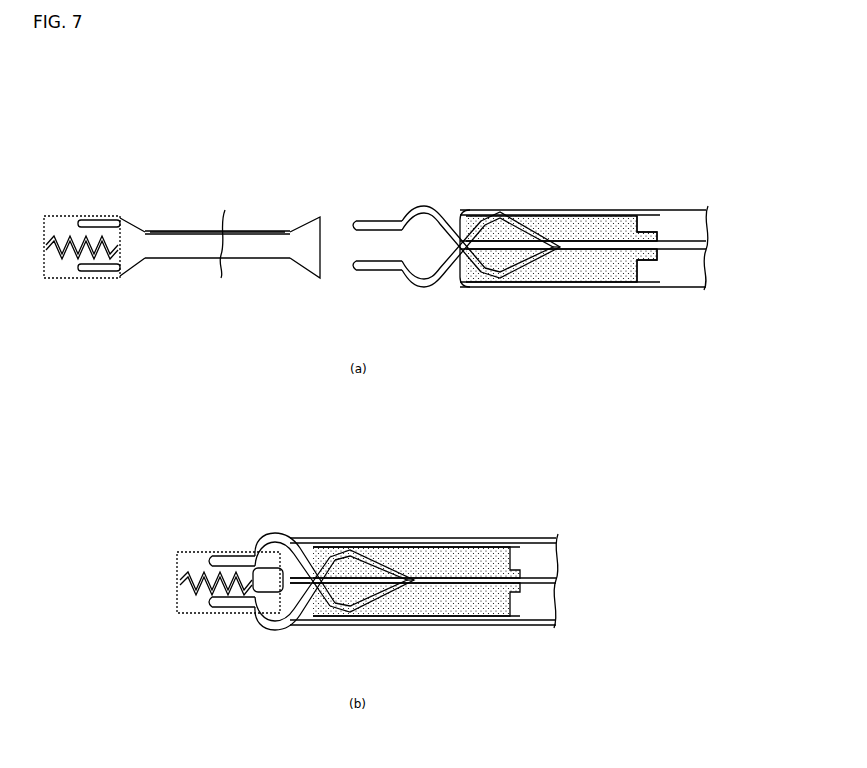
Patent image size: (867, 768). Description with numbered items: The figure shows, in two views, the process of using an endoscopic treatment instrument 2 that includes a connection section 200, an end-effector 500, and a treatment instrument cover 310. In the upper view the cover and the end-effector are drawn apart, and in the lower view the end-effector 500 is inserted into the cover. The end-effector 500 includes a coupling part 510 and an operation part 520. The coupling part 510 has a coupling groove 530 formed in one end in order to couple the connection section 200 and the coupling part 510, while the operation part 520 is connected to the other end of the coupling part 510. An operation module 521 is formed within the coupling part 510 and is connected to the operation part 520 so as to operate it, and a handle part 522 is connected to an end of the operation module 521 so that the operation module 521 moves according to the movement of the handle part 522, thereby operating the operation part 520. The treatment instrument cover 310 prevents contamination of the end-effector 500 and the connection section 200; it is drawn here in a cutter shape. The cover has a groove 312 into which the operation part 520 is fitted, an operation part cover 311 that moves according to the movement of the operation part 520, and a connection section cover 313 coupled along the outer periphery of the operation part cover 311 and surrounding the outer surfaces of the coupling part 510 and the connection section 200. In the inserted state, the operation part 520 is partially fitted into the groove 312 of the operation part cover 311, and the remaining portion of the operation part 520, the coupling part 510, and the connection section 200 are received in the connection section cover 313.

The endoscopic treatment instrument 2 is at (458, 118).
The connection section 200 is at (672, 211).
The treatment instrument cover 310 is at (194, 212).
The operation part cover 311 is at (74, 283).
The groove 312 is at (106, 280).
The connection section cover 313 is at (190, 266).
The end-effector 500 is at (540, 188).
The coupling part 510 is at (538, 288).
The operation part 520 is at (419, 293).
The operation module 521 is at (492, 289).
The handle part 522 is at (585, 215).
The coupling groove 530 is at (640, 288).